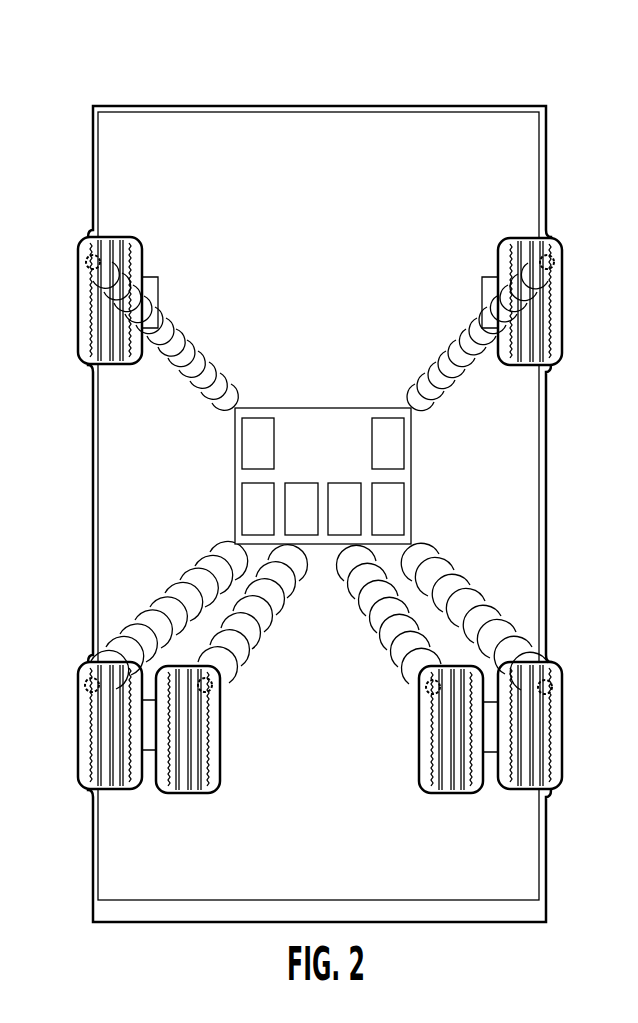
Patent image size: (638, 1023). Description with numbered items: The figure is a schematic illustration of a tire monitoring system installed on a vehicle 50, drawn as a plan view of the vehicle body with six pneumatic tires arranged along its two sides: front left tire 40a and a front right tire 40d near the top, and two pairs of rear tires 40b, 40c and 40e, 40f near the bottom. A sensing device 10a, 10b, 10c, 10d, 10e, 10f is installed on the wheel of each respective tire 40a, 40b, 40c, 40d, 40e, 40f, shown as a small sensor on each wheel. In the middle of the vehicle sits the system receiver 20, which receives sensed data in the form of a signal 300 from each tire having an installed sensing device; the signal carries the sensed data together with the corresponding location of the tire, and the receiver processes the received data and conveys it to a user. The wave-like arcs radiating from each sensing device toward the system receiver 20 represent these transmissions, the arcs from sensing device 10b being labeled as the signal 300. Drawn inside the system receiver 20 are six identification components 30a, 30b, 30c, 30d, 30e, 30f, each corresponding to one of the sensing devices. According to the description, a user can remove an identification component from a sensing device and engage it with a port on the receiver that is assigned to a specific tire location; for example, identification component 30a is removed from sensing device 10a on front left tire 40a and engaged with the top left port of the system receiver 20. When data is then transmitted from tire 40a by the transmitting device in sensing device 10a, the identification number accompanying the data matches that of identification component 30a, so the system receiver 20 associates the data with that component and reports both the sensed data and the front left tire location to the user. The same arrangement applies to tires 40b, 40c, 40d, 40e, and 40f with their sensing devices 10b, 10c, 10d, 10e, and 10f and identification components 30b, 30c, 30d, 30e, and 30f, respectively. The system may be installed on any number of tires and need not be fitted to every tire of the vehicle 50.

The vehicle 50 is at (105, 59).
The system receiver 20 is at (321, 408).
The identification component 30a is at (246, 440).
The identification component 30b is at (246, 513).
The identification component 30c is at (308, 530).
The identification component 30d is at (398, 447).
The identification component 30e is at (396, 518).
The identification component 30f is at (331, 530).
The sensing device 10a is at (86, 262).
The sensing device 10b is at (85, 685).
The sensing device 10c is at (212, 685).
The sensing device 10d is at (554, 262).
The sensing device 10e is at (552, 687).
The sensing device 10f is at (426, 687).
The front left tire 40a is at (78, 338).
The tire 40b is at (78, 764).
The tire 40c is at (220, 764).
The tire 40d is at (562, 338).
The tire 40e is at (562, 764).
The tire 40f is at (419, 764).
The signal 300 is at (157, 590).